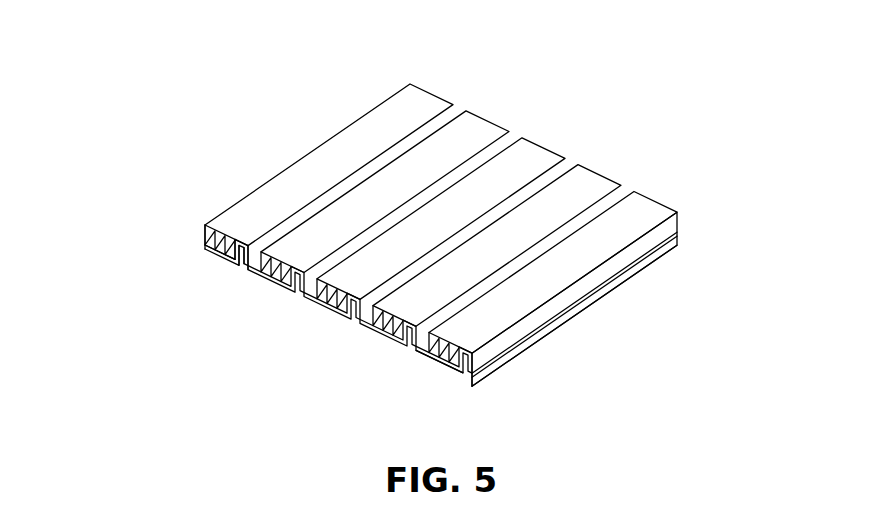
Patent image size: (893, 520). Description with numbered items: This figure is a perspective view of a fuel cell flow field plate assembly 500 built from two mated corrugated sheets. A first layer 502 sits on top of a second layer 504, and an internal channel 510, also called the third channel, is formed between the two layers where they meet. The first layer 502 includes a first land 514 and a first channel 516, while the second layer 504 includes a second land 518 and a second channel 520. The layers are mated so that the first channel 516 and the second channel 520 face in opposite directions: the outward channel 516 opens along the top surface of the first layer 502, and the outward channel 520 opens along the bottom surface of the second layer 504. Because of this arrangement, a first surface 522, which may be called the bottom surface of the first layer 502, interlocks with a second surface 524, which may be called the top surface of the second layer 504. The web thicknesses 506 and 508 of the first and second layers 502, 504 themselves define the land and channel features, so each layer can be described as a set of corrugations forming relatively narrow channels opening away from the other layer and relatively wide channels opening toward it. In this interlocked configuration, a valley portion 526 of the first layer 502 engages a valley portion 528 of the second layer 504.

The fuel cell flow field plate assembly 500 is at (616, 97).
The first layer 502 is at (208, 222).
The second layer 504 is at (211, 257).
The web thickness of first layer 506 is at (203, 231).
The web thickness of second layer 508 is at (206, 243).
The internal channel (third channel) 510 is at (236, 250).
The first land 514 is at (428, 96).
The first channel 516 is at (461, 108).
The second land 518 is at (263, 280).
The second channel 520 is at (246, 262).
The first surface 522 is at (480, 348).
The second surface 524 is at (479, 387).
The valley portion of first layer 526 is at (421, 343).
The valley portion of second layer 528 is at (421, 368).